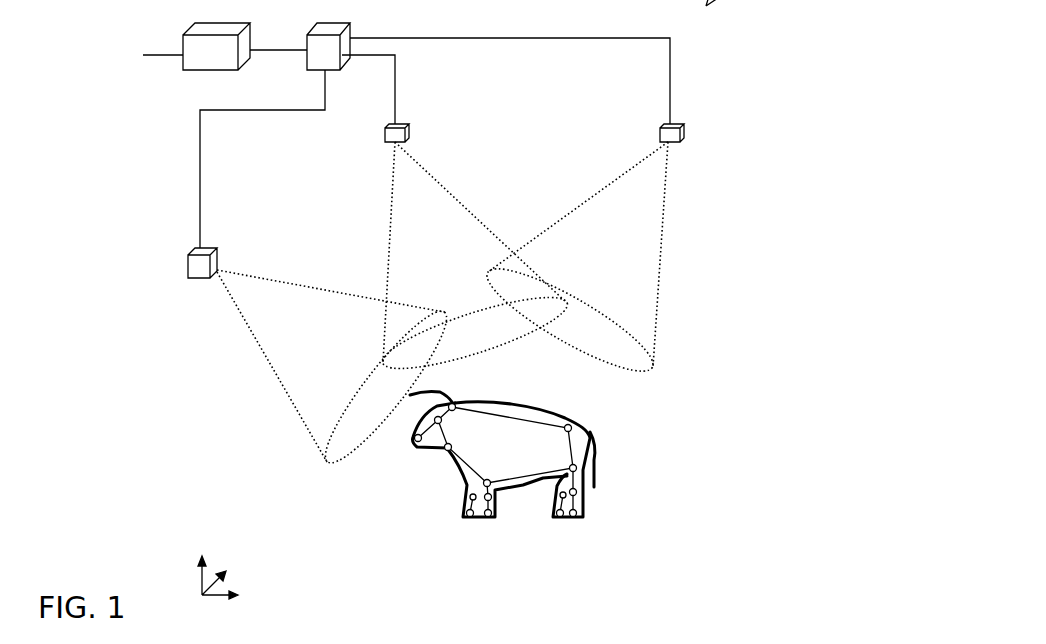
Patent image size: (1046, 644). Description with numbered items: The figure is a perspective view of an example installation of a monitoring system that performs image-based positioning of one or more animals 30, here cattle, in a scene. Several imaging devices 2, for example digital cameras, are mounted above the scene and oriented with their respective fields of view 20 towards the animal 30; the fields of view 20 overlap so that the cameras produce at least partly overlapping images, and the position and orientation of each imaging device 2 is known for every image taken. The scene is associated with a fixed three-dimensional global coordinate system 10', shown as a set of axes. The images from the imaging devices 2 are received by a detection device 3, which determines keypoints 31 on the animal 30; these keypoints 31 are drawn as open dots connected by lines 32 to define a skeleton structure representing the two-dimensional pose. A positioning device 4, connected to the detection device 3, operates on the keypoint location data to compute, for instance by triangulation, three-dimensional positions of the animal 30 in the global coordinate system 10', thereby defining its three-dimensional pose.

The positioning device 4 is at (213, 26).
The detection device 3 is at (327, 28).
The imaging device 2 is at (400, 128).
The field of view 20 is at (458, 200).
The animal 30 is at (488, 402).
The keypoint 31 is at (572, 425).
The line 32 is at (598, 437).
The global coordinate system 10' is at (183, 570).